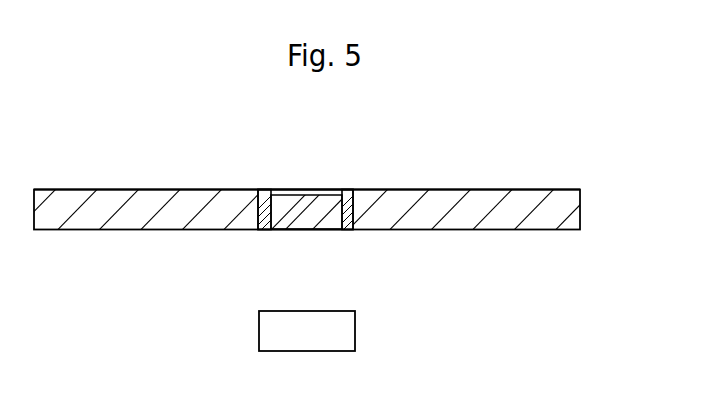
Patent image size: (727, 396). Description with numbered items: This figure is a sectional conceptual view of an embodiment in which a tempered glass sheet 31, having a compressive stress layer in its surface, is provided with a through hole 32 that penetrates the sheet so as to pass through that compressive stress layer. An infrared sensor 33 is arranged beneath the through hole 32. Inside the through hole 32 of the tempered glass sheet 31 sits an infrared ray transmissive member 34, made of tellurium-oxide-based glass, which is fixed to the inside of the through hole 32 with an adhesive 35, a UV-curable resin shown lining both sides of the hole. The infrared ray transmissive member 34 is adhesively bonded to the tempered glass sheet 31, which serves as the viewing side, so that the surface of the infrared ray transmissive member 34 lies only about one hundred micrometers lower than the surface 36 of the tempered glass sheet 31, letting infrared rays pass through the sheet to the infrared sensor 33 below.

The tempered glass sheet 31 is at (555, 208).
The through hole 32 is at (280, 189).
The infrared sensor 33 is at (338, 330).
The infrared ray transmissive member 34 is at (328, 203).
The adhesive 35 is at (263, 230).
The surface of the tempered glass sheet 36 is at (485, 189).